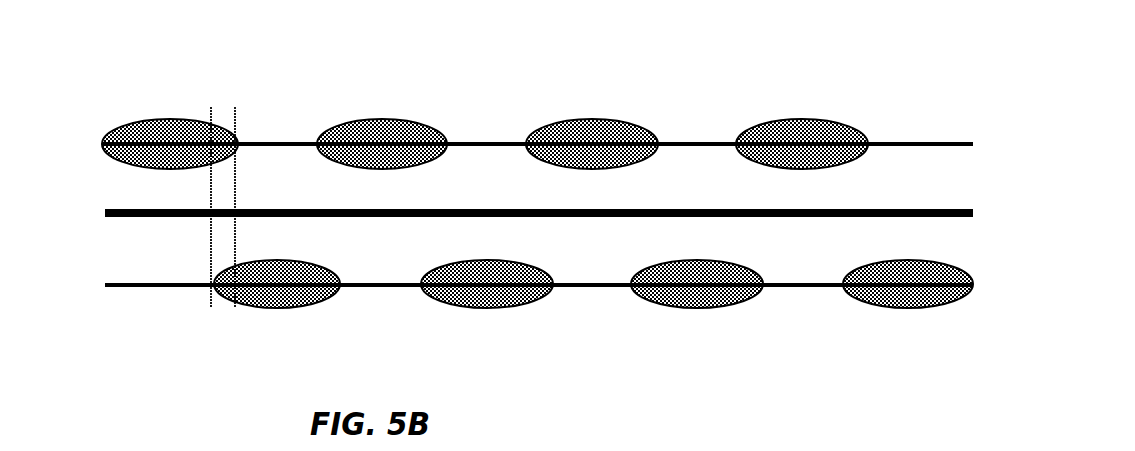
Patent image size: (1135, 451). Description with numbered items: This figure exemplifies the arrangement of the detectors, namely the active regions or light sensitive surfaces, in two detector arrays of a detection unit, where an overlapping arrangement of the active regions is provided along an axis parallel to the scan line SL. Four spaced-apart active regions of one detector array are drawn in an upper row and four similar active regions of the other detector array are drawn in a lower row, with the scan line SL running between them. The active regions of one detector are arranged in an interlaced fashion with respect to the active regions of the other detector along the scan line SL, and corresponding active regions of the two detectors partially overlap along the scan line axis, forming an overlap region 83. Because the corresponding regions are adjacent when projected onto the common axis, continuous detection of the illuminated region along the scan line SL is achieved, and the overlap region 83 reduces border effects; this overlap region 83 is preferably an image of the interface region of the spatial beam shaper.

The overlap region 83 is at (223, 252).
The scan line SL is at (933, 218).